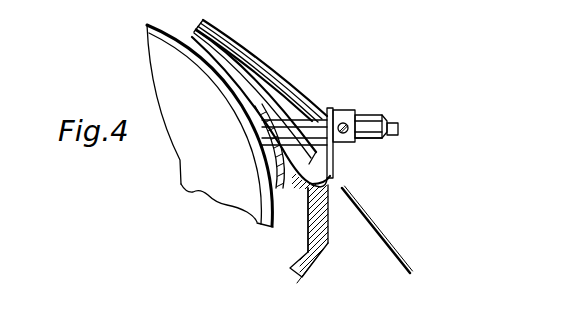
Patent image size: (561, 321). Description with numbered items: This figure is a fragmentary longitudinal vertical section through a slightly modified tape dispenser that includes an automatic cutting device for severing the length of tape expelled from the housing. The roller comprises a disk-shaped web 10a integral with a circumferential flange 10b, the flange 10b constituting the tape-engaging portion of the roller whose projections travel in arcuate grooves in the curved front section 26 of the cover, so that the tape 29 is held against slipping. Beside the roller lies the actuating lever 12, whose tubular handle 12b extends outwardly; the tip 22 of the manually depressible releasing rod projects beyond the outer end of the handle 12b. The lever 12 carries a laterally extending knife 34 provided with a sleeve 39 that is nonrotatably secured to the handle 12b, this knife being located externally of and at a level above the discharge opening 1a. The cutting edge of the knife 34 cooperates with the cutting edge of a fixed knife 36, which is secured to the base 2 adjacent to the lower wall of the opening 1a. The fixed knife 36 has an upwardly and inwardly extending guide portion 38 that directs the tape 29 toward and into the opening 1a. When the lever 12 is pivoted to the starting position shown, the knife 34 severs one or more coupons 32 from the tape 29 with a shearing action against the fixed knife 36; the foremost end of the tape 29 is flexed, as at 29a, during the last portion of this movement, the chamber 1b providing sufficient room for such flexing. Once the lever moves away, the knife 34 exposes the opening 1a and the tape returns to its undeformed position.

The disk-shaped web 10a is at (208, 190).
The circumferential flange 10b is at (217, 87).
The curved front section 26 is at (237, 52).
The tape 29 is at (252, 82).
The flexed tape end 29a is at (300, 183).
The guide portion 38 is at (262, 153).
The actuating lever 12 is at (370, 115).
The handle 12b is at (372, 140).
The tip 22 is at (398, 128).
The knife 34 is at (332, 108).
The sleeve 39 is at (347, 110).
The discharge opening 1a is at (323, 167).
The chamber 1b is at (282, 250).
The fixed knife 36 is at (330, 210).
The base 2 is at (312, 263).
The coupon 32 is at (383, 237).